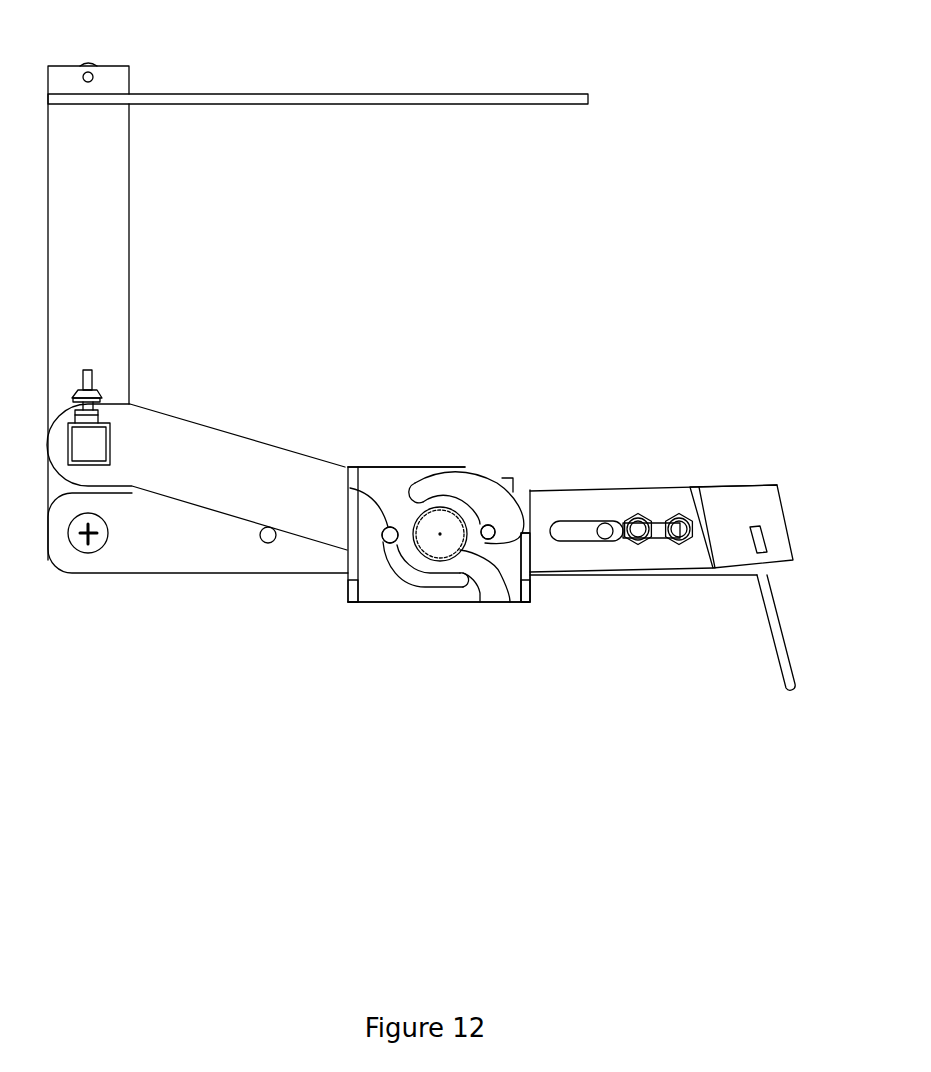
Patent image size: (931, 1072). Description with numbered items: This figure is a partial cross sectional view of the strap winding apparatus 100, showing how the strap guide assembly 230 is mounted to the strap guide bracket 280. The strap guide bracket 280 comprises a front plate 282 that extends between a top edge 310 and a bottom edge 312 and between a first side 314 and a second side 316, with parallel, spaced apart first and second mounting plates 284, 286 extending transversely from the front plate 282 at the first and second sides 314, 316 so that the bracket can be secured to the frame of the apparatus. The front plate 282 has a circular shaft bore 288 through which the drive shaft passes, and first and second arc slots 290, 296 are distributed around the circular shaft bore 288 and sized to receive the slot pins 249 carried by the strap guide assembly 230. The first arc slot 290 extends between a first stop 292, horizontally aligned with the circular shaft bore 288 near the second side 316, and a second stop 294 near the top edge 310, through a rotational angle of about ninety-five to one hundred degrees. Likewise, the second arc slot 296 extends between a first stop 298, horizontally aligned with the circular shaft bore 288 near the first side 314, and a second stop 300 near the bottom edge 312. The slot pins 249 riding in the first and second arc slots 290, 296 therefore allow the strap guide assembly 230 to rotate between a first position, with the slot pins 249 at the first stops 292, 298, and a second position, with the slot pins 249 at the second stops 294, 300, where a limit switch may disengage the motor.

The apparatus for winding a strap into a roll 100 is at (685, 80).
The strap guide assembly 230 is at (763, 477).
The slot pins 249 is at (518, 503).
The strap guide bracket 280 is at (467, 468).
The front plate 282 is at (400, 478).
The first mounting plate 284 is at (386, 543).
The second mounting plate 286 is at (532, 603).
The circular shaft bore 288 is at (497, 570).
The first arc slot 290 is at (478, 490).
The first stop 292 is at (495, 530).
The second stop 294 is at (413, 490).
The second arc slot 296 is at (415, 585).
The first stop 298 is at (350, 488).
The second stop 300 is at (463, 578).
The top edge 310 is at (382, 465).
The bottom edge 312 is at (383, 602).
The first side 314 is at (347, 588).
The second side 316 is at (530, 588).